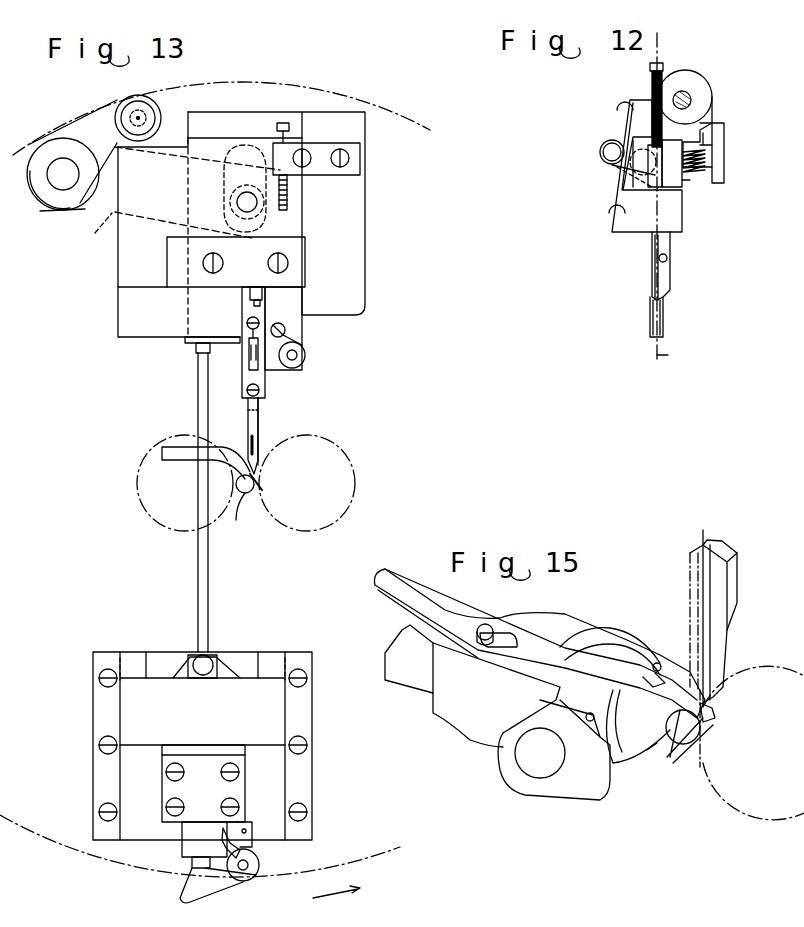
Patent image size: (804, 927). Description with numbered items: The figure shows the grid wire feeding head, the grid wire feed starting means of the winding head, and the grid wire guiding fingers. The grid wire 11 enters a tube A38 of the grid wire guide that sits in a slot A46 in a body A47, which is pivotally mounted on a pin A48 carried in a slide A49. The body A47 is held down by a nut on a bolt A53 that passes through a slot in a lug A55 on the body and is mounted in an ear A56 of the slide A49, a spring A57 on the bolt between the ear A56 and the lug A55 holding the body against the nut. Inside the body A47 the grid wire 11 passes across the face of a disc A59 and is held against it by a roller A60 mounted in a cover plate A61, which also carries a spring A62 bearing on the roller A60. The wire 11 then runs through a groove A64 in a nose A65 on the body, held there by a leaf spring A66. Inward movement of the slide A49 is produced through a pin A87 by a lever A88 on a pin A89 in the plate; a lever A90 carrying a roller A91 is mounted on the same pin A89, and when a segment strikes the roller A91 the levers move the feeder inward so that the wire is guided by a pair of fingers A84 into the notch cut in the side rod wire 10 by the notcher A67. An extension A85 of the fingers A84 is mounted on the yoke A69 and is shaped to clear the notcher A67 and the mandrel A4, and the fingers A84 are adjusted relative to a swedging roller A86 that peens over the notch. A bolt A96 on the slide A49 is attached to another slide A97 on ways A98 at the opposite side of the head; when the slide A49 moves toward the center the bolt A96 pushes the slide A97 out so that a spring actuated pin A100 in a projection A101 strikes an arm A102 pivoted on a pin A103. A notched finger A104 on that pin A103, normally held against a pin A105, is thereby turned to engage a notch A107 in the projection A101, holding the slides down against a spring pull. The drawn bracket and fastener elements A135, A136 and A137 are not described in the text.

In FIG. 13, the slide A49 is at (210, 146).
In FIG. 13, the clamp bracket A137 is at (327, 147).
In FIG. 13, the adjusting screw A136 is at (290, 199).
In FIG. 13, the pin A87 is at (238, 196).
In FIG. 13, the lever A88 is at (174, 195).
In FIG. 13, the cover plate A135 is at (306, 260).
In FIG. 13, the roller A91 is at (141, 96).
In FIG. 13, the pin A89 is at (58, 188).
In FIG. 13, the lever A90 is at (83, 120).
In FIG. 13, the tube A38 is at (257, 287).
In FIG. 12, the tube A38 is at (663, 70).
In FIG. 13, the slot A46 is at (262, 302).
In FIG. 13, the spring A62 is at (249, 350).
In FIG. 12, the spring A62 is at (606, 142).
In FIG. 13, the nose A65 is at (247, 433).
In FIG. 12, the nose A65 is at (671, 270).
In FIG. 15, the nose A65 is at (738, 634).
In FIG. 13, the leaf spring A66 is at (263, 452).
In FIG. 13, the extension A85 is at (176, 446).
In FIG. 15, the extension A85 is at (545, 640).
In FIG. 13, the fingers A84 is at (255, 474).
In FIG. 15, the fingers A84 is at (714, 712).
In FIG. 13, the swedging roller A86 is at (348, 458).
In FIG. 15, the swedging roller A86 is at (732, 807).
In FIG. 13, the notcher A67 is at (147, 512).
In FIG. 15, the notcher A67 is at (627, 767).
In FIG. 13, the mandrel A4 is at (237, 511).
In FIG. 15, the mandrel A4 is at (690, 739).
In FIG. 13, the bolt A96 is at (210, 571).
In FIG. 13, the ways A98 is at (128, 650).
In FIG. 13, the slide A97 is at (242, 676).
In FIG. 13, the projection A101 is at (181, 852).
In FIG. 13, the notch A107 is at (220, 845).
In FIG. 13, the pin A105 is at (252, 827).
In FIG. 13, the notched finger A104 is at (252, 847).
In FIG. 13, the pin A103 is at (260, 872).
In FIG. 13, the spring actuated pin A100 is at (193, 862).
In FIG. 13, the arm A102 is at (218, 894).
In FIG. 12, the pin A48 is at (690, 97).
In FIG. 12, the body A47 is at (650, 100).
In FIG. 12, the disc A59 is at (668, 188).
In FIG. 12, the roller A60 is at (630, 165).
In FIG. 12, the cover plate A61 is at (627, 190).
In FIG. 12, the ear A56 is at (725, 175).
In FIG. 12, the spring A57 is at (706, 157).
In FIG. 12, the bolt A53 is at (700, 177).
In FIG. 12, the lug A55 is at (685, 180).
In FIG. 12, the groove A64 is at (652, 293).
In FIG. 15, the groove A64 is at (690, 613).
In FIG. 12, the grid wire 11 is at (672, 355).
In FIG. 15, the grid wire 11 is at (703, 527).
In FIG. 15, the yoke A69 is at (466, 740).
In FIG. 15, the side rod wire 10 is at (670, 753).